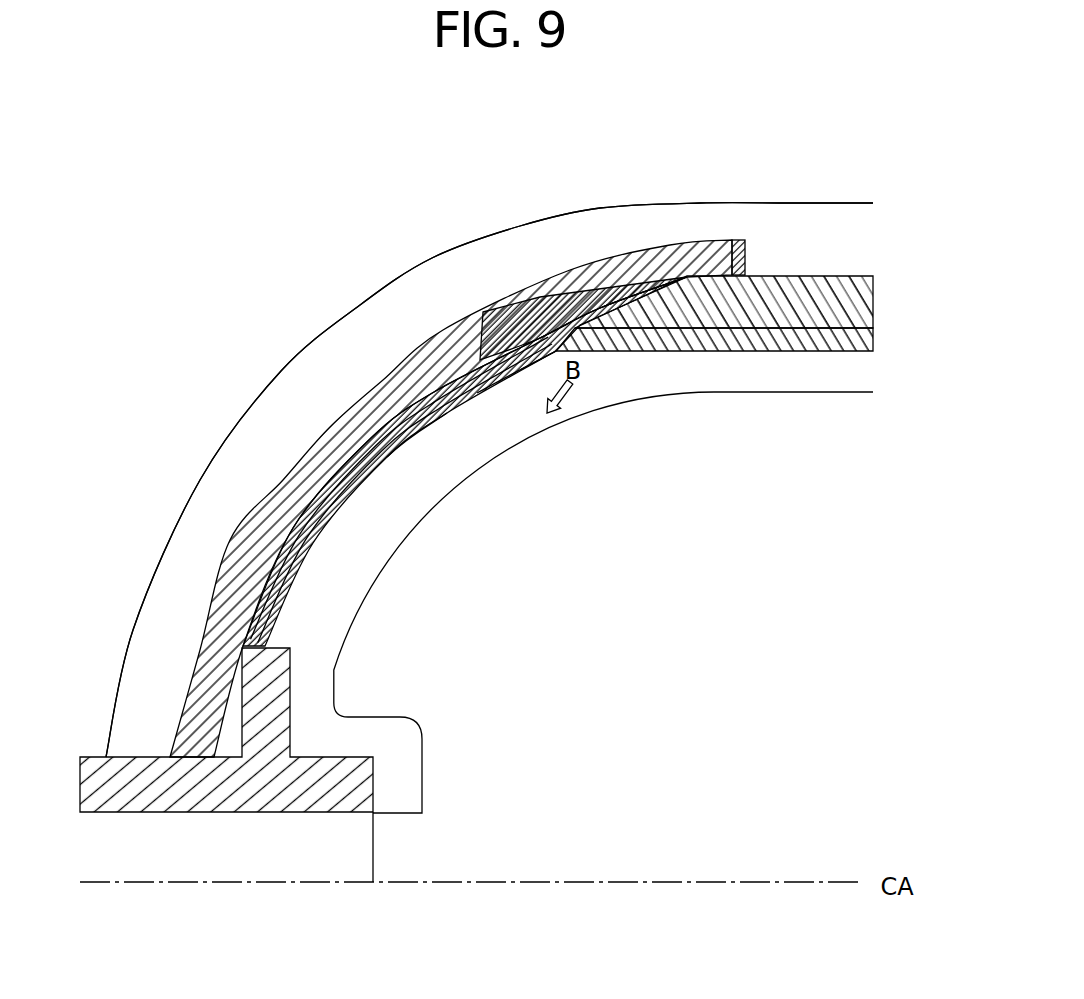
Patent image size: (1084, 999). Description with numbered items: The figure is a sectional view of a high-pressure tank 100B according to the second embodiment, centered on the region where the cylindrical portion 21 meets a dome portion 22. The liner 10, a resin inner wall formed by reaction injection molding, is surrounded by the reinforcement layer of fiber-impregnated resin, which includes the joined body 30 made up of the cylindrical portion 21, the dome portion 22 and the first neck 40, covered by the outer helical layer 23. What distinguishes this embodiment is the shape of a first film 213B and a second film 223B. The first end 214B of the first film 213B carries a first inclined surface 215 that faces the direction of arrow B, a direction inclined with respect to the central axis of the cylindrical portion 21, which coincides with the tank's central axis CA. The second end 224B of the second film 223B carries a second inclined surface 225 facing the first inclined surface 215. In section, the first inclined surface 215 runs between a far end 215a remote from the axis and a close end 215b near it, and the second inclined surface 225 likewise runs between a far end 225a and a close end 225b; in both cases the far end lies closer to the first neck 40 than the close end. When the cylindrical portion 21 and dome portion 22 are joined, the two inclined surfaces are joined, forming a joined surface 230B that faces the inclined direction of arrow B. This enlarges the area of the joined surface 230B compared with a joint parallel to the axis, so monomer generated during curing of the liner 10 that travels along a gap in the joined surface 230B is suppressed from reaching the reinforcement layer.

The high-pressure tank 100B is at (818, 180).
The outer helical layer 23 is at (788, 242).
The liner 10 is at (747, 373).
The first neck 40 is at (373, 835).
The joined body 30 is at (733, 148).
The dome portion 22 is at (590, 297).
The cylindrical portion 21 is at (738, 302).
The first film 213B is at (714, 400).
The first end 214B is at (665, 315).
The first inclined surface 215 is at (600, 350).
The second inclined surface 225 is at (480, 322).
The joined surface 230B is at (520, 300).
The far end 215a is at (520, 228).
The far end 225a is at (550, 300).
The close end 215b is at (569, 458).
The close end 225b is at (590, 363).
The second film 223B is at (447, 412).
The second end 224B is at (565, 350).